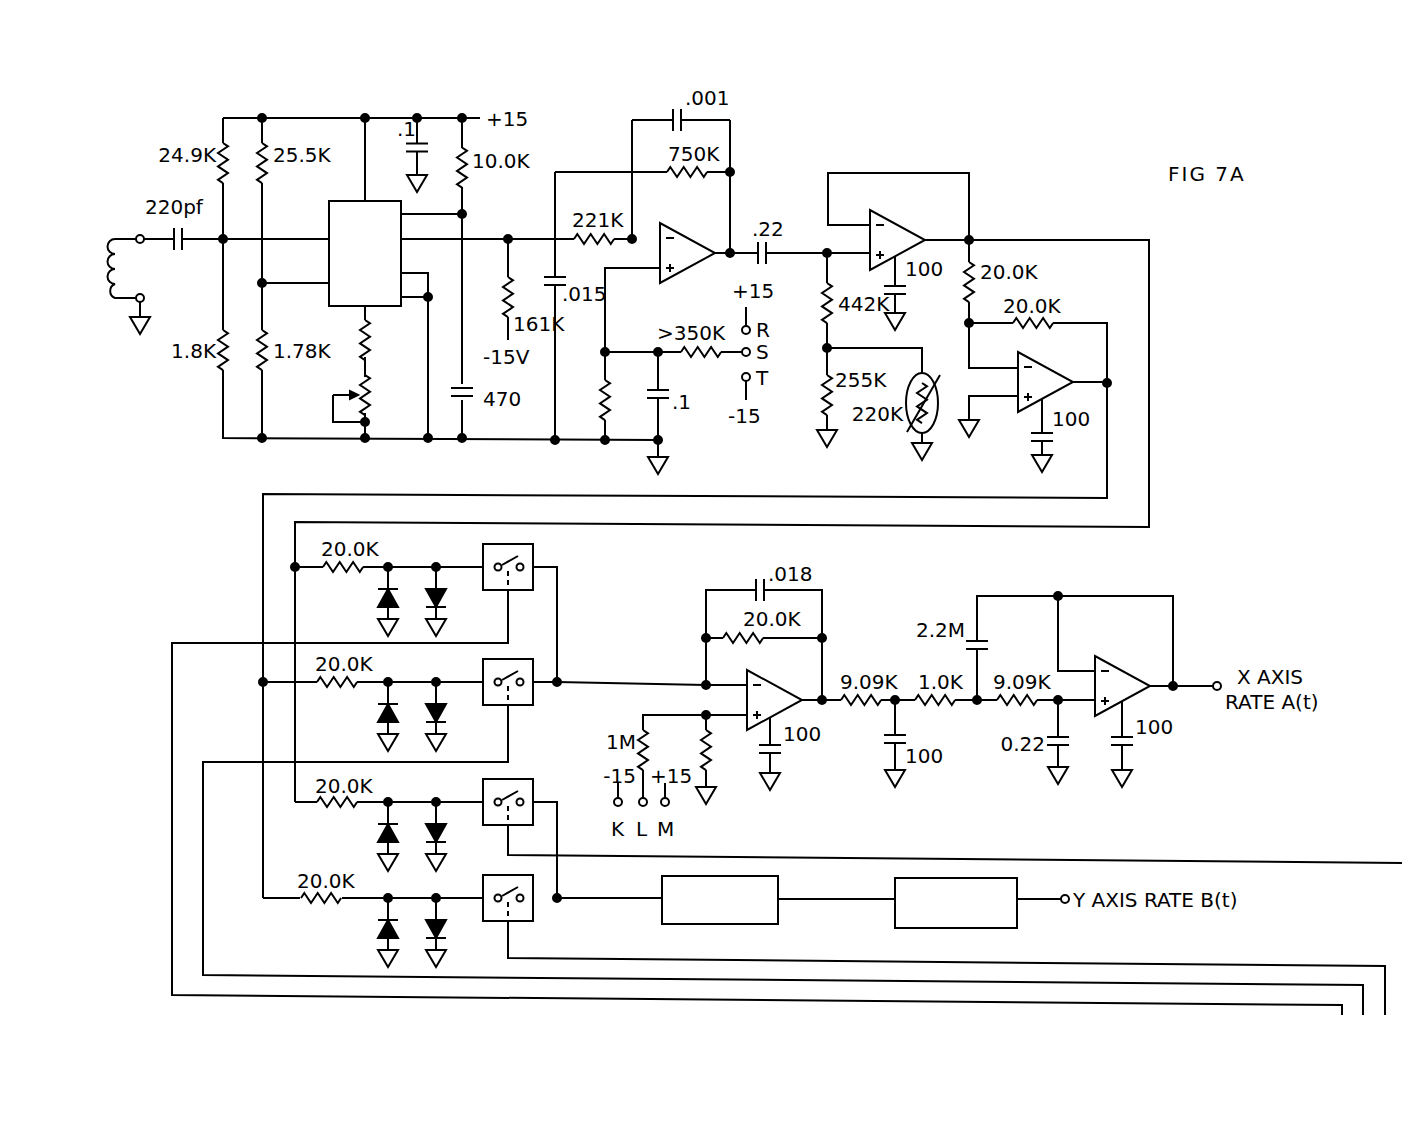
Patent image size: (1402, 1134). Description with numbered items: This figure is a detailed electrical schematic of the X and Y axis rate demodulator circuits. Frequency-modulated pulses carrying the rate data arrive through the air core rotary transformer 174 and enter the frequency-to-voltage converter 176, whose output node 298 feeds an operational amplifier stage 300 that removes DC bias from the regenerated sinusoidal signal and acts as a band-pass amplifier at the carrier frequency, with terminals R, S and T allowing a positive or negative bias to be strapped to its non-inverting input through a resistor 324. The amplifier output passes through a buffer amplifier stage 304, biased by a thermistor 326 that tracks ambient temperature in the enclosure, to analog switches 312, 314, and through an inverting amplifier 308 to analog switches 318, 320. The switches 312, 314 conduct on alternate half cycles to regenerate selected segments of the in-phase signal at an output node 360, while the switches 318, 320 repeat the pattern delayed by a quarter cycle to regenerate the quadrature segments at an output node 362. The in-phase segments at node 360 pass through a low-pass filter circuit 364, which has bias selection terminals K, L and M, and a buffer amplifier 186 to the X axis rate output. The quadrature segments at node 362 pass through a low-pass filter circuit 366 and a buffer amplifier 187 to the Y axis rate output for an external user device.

The air core rotary transformer 174 is at (118, 239).
The frequency-to-voltage converter 176 is at (331, 200).
The converter output node 298 is at (482, 239).
The operational amplifier stage 300 is at (691, 237).
The buffer amplifier stage 304 is at (893, 223).
The inverting amplifier 308 is at (1040, 367).
The resistor 324 is at (625, 404).
The thermistor 326 is at (937, 432).
The analog switch 312 is at (535, 551).
The analog switch 314 is at (521, 706).
The analog switch 318 is at (512, 779).
The analog switch 320 is at (521, 921).
The output node 360 is at (560, 681).
The output node 362 is at (560, 896).
The low-pass filter circuit 364 is at (773, 680).
The buffer amplifier 186 is at (1125, 668).
The low-pass filter circuit 366 is at (770, 924).
The buffer amplifier 187 is at (1000, 928).